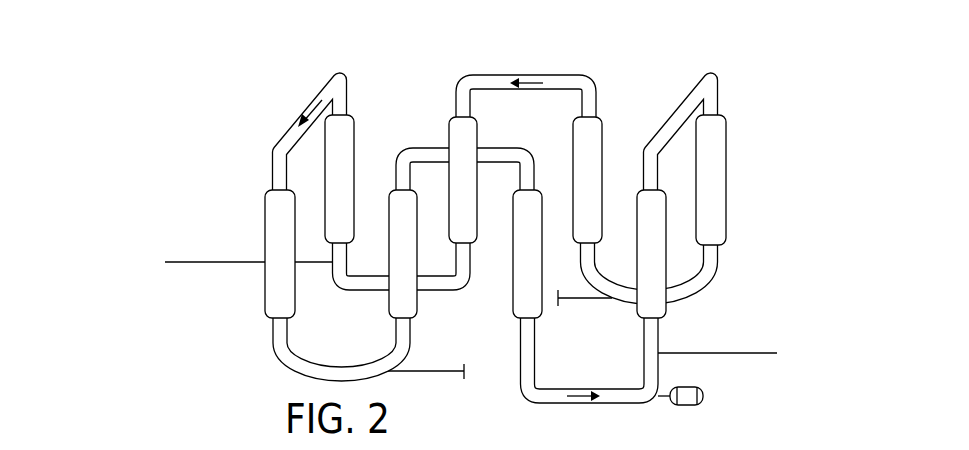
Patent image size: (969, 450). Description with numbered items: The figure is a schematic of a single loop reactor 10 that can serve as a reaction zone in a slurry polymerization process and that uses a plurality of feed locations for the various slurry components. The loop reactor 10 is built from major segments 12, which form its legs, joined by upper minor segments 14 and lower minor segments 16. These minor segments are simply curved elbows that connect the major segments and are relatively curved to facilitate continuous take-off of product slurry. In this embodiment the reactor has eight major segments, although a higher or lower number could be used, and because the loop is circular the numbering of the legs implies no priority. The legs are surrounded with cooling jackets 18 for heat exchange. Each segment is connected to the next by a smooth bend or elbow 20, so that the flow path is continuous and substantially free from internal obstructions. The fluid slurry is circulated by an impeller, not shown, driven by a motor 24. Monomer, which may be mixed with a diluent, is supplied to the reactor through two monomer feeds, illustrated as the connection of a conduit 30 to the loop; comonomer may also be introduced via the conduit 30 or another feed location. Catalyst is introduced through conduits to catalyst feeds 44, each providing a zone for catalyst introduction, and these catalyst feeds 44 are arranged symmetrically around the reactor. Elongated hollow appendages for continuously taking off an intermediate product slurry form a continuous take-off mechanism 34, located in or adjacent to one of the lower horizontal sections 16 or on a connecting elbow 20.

The loop reactor 10 is at (470, 224).
The major segments 12 is at (275, 350).
The upper minor segments 14 is at (327, 87).
The lower minor segments 16 is at (713, 278).
The cooling jackets 18 is at (265, 210).
The elbow 20 is at (520, 358).
The motor 24 is at (687, 405).
The conduit 30 is at (217, 262).
The continuous take-off mechanism 34 is at (422, 371).
The catalyst feeds 44 is at (433, 290).